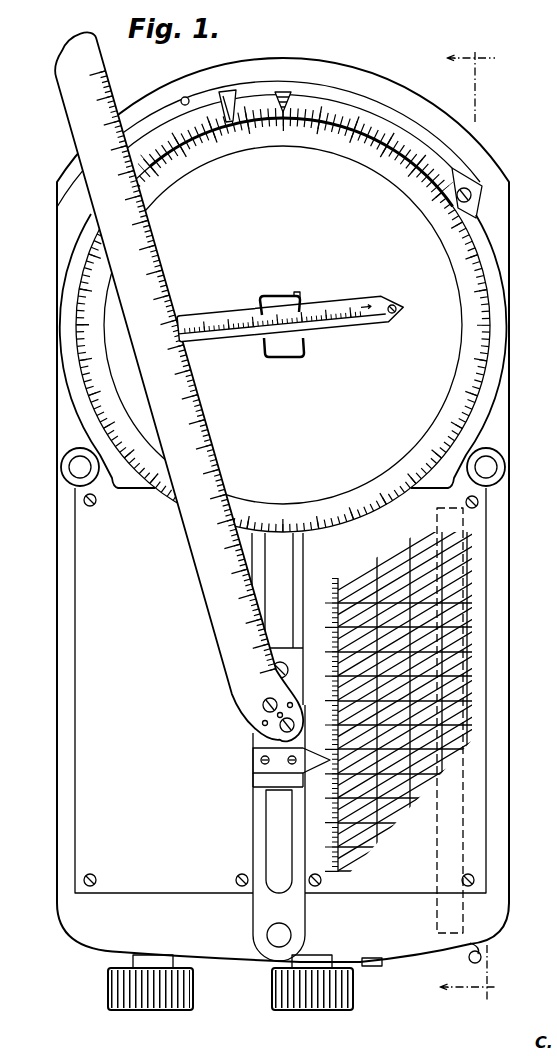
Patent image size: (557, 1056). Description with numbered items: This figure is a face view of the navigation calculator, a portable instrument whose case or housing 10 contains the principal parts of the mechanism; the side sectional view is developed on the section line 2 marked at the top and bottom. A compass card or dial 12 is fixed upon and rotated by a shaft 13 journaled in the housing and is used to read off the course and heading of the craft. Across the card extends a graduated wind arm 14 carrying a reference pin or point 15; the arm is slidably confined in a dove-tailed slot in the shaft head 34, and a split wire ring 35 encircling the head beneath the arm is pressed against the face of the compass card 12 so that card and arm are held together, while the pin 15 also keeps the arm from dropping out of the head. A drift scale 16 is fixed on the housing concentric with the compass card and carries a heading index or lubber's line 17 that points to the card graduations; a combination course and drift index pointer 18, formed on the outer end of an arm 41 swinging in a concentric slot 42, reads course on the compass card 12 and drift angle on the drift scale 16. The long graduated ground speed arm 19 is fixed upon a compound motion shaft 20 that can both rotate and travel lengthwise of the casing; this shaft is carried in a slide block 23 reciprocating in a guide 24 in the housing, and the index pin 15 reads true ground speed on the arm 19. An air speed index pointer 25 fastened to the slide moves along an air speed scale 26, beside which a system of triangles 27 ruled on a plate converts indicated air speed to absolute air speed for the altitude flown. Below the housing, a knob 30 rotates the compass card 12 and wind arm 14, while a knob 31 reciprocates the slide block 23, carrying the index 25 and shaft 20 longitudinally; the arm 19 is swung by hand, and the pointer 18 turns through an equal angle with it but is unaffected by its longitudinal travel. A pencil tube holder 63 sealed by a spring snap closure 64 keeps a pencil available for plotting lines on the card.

The section line 2— 2 is at (468, 519).
The instrument case or housing 10 is at (220, 65).
The compass card or dial 12 is at (380, 128).
The shaft 13 is at (266, 356).
The wind arm 14 is at (367, 328).
The reference pin or point 15 is at (182, 331).
The drift scale 16 is at (337, 98).
The heading index or lubber's line 17 is at (284, 91).
The course and drift index pointer 18 is at (234, 92).
The ground speed arm 19 is at (67, 98).
The compound motion shaft 20 is at (262, 715).
The slide block 23 is at (276, 651).
The guide 24 is at (261, 557).
The air speed index pointer 25 is at (268, 792).
The air speed scale 26 is at (338, 580).
The system of triangles 27 is at (395, 562).
The knob 30 is at (148, 1004).
The knob 31 is at (311, 1004).
The shaft head 34 is at (299, 297).
The split wire ring 35 is at (270, 290).
The arm 41 is at (259, 84).
The concentric slot 42 is at (185, 97).
The pencil tube holder 63 is at (465, 905).
The spring snap closure 64 is at (390, 962).